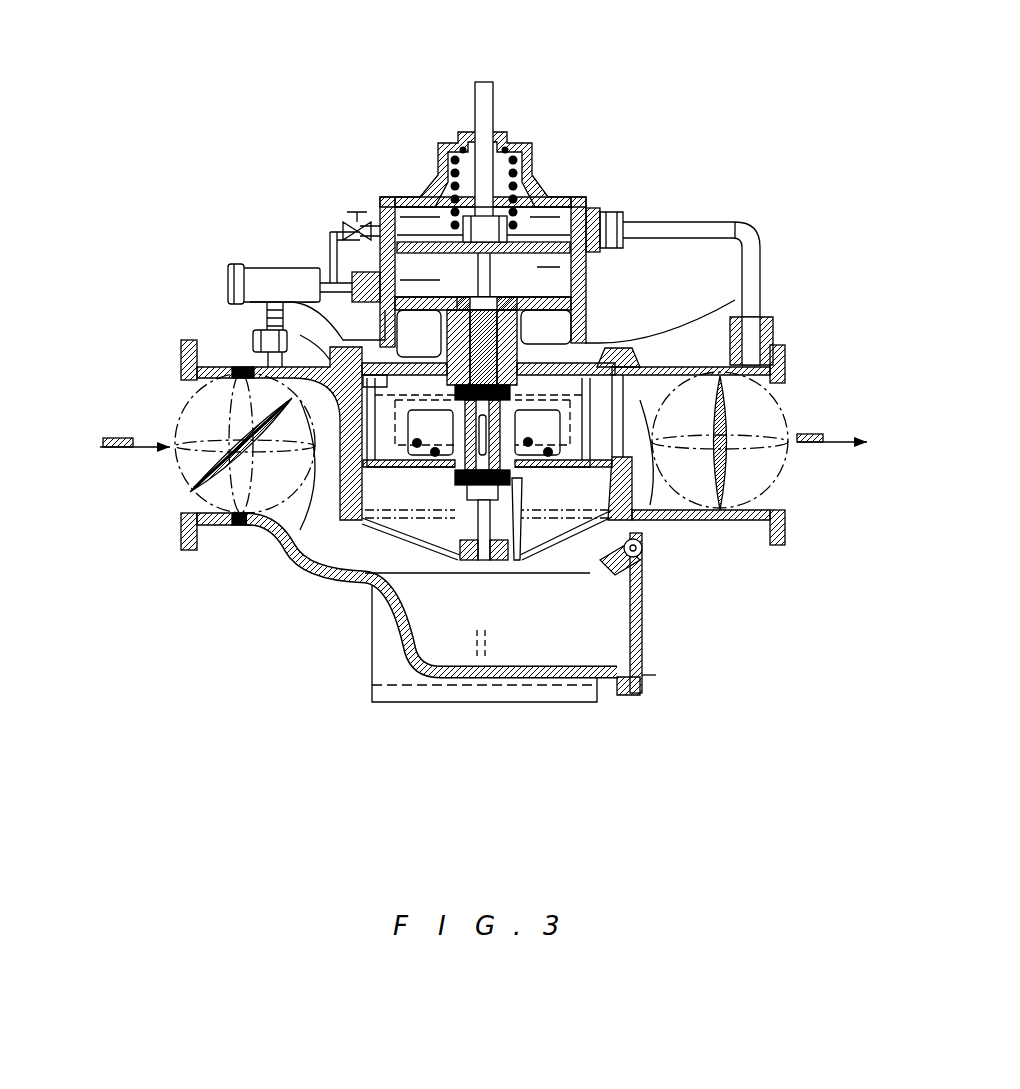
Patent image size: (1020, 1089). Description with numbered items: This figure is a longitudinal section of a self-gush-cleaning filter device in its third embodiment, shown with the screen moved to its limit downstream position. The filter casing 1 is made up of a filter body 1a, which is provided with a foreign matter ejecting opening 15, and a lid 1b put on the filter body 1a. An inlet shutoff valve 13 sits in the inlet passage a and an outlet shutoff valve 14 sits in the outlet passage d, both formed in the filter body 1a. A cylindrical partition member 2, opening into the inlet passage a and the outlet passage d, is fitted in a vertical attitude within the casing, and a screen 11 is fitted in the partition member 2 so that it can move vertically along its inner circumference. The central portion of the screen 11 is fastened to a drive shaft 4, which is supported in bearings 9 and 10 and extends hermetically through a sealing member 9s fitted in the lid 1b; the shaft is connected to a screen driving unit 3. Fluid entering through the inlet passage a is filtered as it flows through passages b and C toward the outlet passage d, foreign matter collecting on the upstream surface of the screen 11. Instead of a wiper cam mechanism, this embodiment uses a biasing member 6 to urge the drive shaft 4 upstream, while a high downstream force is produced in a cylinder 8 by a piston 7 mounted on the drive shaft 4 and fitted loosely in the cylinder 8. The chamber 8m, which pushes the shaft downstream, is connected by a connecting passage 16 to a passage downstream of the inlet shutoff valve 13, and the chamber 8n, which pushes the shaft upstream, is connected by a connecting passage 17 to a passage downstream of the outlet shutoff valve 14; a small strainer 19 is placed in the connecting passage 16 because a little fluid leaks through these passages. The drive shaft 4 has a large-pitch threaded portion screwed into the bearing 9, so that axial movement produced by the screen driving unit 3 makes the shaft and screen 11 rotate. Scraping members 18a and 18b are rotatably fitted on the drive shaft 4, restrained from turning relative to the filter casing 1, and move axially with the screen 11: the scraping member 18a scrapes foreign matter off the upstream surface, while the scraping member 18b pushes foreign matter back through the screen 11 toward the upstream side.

The filter casing 1 is at (310, 608).
The filter body 1a is at (368, 572).
The lid 1b is at (300, 335).
The partition member 2 is at (253, 377).
The screen driving unit 3 is at (590, 163).
The drive shaft 4 is at (430, 180).
The biasing member 6 is at (535, 192).
The piston 7 is at (410, 217).
The cylinder 8 is at (440, 250).
The chamber 8n is at (585, 192).
The chamber 8m is at (540, 267).
The sealing member 9s is at (560, 300).
The bearing 9 is at (520, 337).
The bearing 10 is at (465, 522).
The screen 11 is at (590, 368).
The inlet shutoff valve 13 is at (183, 490).
The outlet shutoff valve 14 is at (740, 503).
The foreign matter ejecting opening 15 is at (637, 613).
The connecting passage 16 is at (330, 285).
The connecting passage 17 is at (760, 245).
The scraping member 18a is at (547, 522).
The scraping member 18b is at (583, 407).
The small strainer 19 is at (273, 285).
The inlet passage a is at (217, 423).
The passage b is at (322, 520).
The passage C is at (657, 487).
The outlet passage d is at (755, 470).